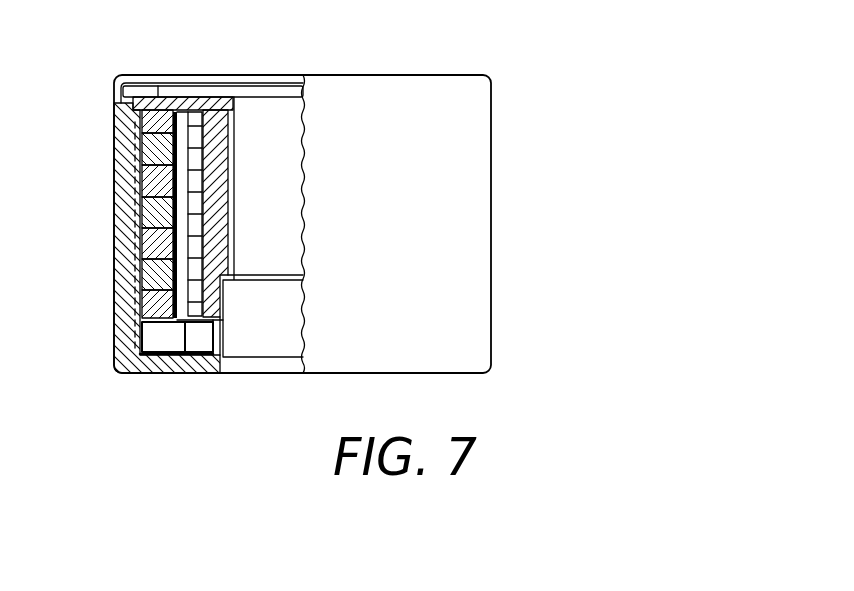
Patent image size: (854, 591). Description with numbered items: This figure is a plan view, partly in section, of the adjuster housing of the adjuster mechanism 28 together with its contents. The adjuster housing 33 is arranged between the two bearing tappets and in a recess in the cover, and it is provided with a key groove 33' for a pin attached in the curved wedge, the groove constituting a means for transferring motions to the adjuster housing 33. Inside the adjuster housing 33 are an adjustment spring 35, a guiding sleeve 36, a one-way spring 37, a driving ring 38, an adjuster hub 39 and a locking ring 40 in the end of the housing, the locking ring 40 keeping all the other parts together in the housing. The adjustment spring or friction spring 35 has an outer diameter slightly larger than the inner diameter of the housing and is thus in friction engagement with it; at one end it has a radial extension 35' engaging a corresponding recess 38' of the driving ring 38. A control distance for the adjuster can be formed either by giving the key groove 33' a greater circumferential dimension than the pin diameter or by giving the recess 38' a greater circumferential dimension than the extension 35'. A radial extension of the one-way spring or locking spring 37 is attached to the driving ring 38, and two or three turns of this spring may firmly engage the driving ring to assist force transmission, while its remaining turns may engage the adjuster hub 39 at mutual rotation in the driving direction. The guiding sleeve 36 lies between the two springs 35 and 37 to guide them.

The adjuster mechanism 28 is at (403, 74).
The adjuster housing 33 is at (129, 238).
The key groove 33' is at (83, 237).
The adjustment spring 35 is at (105, 214).
The radial extension 35' is at (172, 380).
The guiding sleeve 36 is at (179, 111).
The one-way spring 37 is at (199, 111).
The driving ring 38 is at (251, 376).
The recess 38' is at (211, 380).
The adjuster hub 39 is at (221, 110).
The locking ring 40 is at (146, 91).